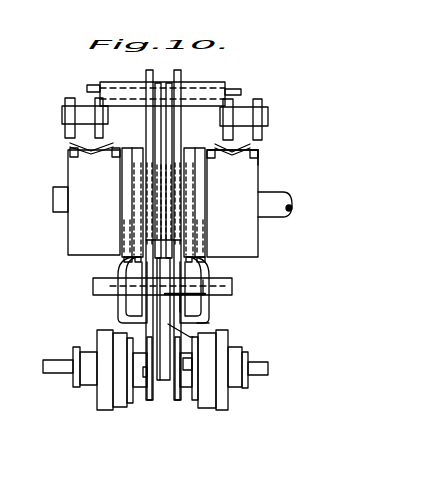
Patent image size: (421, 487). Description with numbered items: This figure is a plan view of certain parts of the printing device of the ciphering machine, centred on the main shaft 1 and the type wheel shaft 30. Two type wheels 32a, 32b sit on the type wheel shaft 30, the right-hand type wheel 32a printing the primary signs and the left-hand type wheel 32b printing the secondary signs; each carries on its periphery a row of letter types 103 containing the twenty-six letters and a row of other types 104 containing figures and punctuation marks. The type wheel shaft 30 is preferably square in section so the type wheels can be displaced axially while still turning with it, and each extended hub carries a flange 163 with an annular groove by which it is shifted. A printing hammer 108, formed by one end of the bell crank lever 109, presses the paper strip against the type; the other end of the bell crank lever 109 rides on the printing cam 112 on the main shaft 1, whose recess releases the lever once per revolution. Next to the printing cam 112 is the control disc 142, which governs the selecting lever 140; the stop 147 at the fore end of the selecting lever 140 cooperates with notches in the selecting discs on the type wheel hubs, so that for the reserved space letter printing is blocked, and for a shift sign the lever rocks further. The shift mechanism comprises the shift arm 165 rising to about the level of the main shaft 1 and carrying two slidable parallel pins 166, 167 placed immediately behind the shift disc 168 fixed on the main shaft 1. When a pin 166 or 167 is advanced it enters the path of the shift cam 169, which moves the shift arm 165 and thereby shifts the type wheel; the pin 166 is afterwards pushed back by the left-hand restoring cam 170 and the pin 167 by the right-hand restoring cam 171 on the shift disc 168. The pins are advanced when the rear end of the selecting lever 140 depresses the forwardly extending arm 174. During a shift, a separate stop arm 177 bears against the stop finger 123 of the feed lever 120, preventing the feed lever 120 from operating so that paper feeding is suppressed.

The main shaft 1 is at (292, 206).
The type wheel shaft 30 is at (267, 373).
The type wheel 32a is at (208, 408).
The type wheel 32b is at (110, 410).
The row of letter types 103 is at (120, 397).
The row of other types 104 is at (98, 395).
The printing hammer 108 is at (118, 305).
The bell crank lever 109 is at (123, 262).
The printing cam 112 is at (142, 153).
The feed lever 120 is at (188, 303).
The stop finger 123 is at (195, 330).
The selecting lever 140 is at (176, 340).
The control disc 142 is at (172, 212).
The stop 147 is at (175, 373).
The flange 163 is at (93, 350).
The shift arm 165 is at (257, 132).
The pin 166 is at (233, 100).
The pin 167 is at (250, 122).
The shift disc 168 is at (253, 185).
The shift cam 169 is at (257, 153).
The restoring cam 170 is at (245, 146).
The restoring cam 171 is at (261, 158).
The arm 174 is at (170, 115).
The stop arm 177 is at (203, 290).